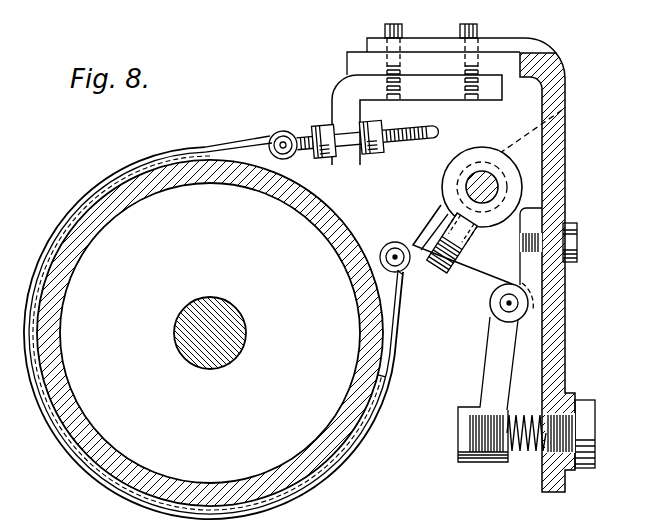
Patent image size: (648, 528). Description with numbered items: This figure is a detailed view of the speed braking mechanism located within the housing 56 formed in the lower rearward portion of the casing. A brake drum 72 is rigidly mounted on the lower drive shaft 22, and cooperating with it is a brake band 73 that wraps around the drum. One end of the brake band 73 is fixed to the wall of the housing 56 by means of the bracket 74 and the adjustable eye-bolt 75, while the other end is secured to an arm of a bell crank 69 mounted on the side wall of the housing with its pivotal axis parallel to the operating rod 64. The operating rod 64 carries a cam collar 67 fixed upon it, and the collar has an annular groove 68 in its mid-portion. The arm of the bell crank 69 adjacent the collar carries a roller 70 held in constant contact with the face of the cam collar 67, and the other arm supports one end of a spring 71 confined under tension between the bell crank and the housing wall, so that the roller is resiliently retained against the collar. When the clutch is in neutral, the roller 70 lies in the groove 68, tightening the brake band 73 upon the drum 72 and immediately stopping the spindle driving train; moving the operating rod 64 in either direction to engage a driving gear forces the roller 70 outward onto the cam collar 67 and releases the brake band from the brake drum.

The lower drive shaft 22 is at (240, 331).
The housing 56 is at (556, 330).
The operating rod 64 is at (496, 183).
The cam collar 67 is at (520, 190).
The annular groove 68 is at (571, 110).
The bell crank 69 is at (475, 304).
The roller 70 is at (432, 224).
The spring 71 is at (523, 447).
The brake drum 72 is at (312, 206).
The brake band 73 is at (52, 233).
The bracket 74 is at (350, 84).
The adjustable eye-bolt 75 is at (302, 136).